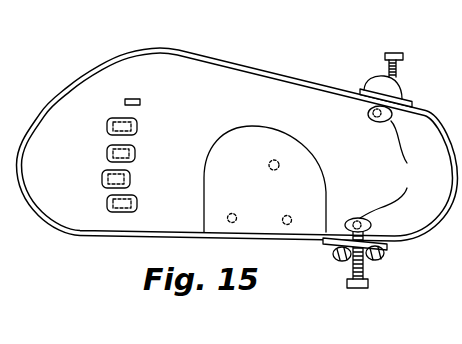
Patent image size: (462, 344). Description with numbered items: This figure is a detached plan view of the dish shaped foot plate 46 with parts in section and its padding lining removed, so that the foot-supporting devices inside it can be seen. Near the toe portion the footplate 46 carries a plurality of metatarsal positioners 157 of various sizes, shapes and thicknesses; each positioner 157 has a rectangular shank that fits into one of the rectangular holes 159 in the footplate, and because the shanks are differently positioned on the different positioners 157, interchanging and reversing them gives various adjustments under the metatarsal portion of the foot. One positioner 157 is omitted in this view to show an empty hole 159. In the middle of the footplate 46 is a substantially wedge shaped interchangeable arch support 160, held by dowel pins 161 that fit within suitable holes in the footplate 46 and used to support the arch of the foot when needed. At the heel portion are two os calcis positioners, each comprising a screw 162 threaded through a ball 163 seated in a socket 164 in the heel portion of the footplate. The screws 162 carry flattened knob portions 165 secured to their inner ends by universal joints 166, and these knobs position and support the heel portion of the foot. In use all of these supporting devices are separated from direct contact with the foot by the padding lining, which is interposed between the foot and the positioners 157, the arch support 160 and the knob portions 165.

The foot plate 46 is at (288, 80).
The metatarsal positioners 157 is at (137, 128).
The rectangular holes 159 is at (133, 99).
The arch support 160 is at (251, 133).
The dowel pins 161 is at (284, 216).
The screws 162 is at (399, 71).
The balls 163 is at (382, 253).
The sockets 164 is at (343, 259).
The flattened knob portions 165 is at (398, 169).
The universal joints 166 is at (380, 122).